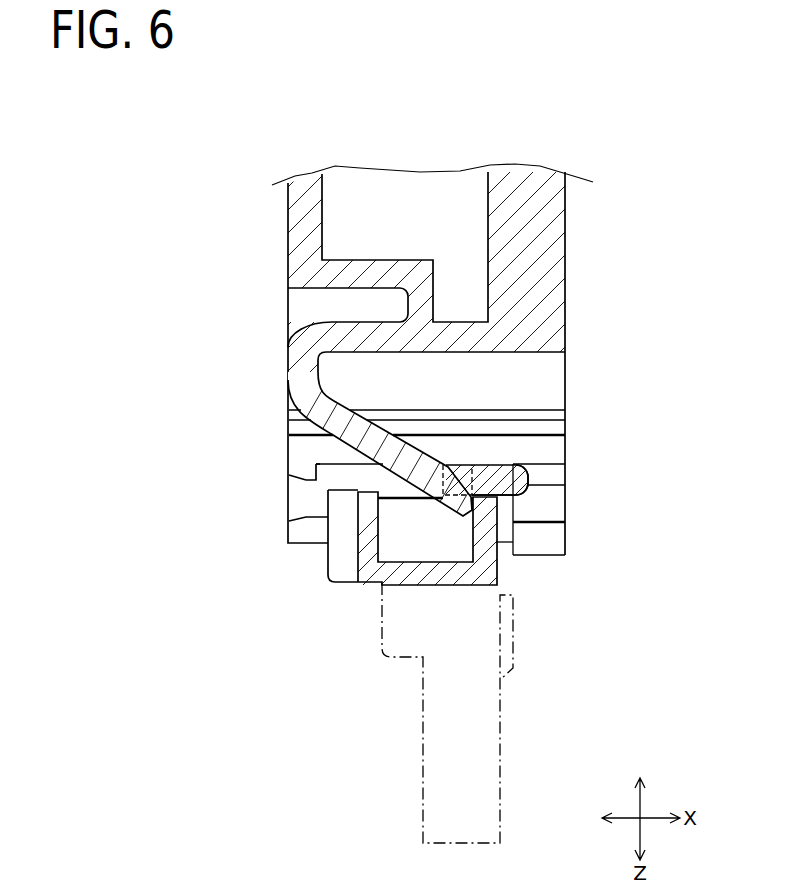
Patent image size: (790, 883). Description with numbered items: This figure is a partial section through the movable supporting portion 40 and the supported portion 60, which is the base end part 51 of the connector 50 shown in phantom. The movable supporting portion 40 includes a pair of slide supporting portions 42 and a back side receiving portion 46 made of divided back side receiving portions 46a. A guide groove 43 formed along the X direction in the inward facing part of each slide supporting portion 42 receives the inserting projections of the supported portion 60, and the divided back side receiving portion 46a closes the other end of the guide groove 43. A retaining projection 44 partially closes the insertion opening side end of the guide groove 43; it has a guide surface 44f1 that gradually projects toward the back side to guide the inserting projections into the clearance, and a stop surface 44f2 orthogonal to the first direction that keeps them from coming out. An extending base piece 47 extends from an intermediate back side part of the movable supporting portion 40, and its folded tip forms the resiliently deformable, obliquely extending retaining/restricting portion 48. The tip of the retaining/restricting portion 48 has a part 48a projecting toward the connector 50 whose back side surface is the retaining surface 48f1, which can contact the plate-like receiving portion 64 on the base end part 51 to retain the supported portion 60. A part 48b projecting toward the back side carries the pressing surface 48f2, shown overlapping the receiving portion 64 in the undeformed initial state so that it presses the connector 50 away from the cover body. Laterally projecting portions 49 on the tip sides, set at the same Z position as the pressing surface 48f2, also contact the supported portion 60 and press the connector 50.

The movable supporting portion 40 is at (566, 228).
The extending base piece 47 is at (332, 321).
The supported portion 60 is at (363, 492).
The retaining/restricting portion 48 is at (515, 463).
The laterally projecting portion 49 is at (444, 495).
The receiving portion 64 is at (545, 434).
The slide supporting portion 42 is at (566, 440).
The retaining projection 44 is at (310, 482).
The guide surface 44f1 is at (289, 478).
The stop surface 44f2 is at (320, 463).
The guide groove 43 is at (306, 512).
The part projecting toward the connector 48a is at (462, 513).
The retaining surface 48f1 is at (473, 514).
The part projecting toward the back side 48b is at (531, 478).
The pressing surface 48f2 is at (508, 501).
The back side receiving portion 46 is at (556, 559).
The divided back side receiving portion 46a is at (557, 549).
The base end part 51 is at (497, 571).
The connector 50 is at (357, 632).